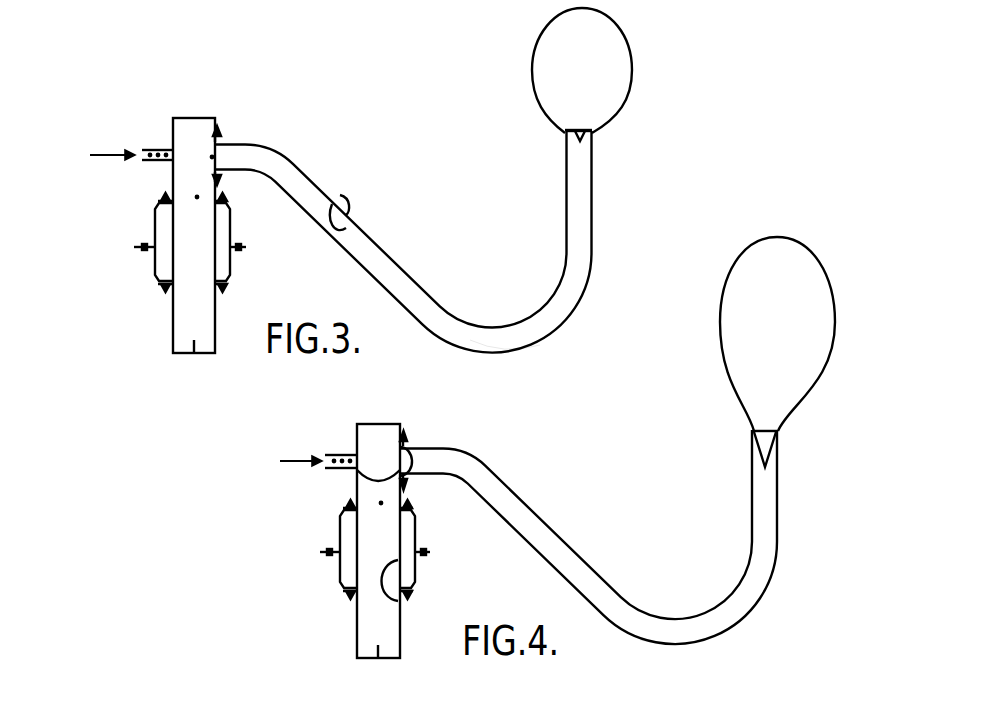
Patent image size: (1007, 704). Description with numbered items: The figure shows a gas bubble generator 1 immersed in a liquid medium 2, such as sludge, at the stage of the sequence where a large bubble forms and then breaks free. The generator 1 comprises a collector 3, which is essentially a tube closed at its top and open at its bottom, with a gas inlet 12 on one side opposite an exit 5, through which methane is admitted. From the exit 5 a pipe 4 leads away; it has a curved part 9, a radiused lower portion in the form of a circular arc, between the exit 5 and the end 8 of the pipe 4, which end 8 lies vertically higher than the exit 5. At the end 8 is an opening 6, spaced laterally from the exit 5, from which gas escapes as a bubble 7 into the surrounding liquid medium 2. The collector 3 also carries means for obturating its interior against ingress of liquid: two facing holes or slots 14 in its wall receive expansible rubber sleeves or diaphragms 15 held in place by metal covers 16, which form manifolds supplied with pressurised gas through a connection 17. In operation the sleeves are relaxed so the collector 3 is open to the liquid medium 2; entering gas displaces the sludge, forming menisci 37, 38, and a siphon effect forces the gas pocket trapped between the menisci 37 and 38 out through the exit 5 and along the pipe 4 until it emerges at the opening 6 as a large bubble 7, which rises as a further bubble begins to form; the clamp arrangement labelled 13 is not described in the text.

In FIG. 3, the gas bubble generator 1 is at (428, 240).
In FIG. 4, the gas bubble generator 1 is at (592, 540).
In FIG. 3, the liquid medium 2 is at (277, 258).
In FIG. 4, the liquid medium 2 is at (497, 586).
In FIG. 3, the collector 3 is at (216, 122).
In FIG. 4, the collector 3 is at (400, 432).
In FIG. 3, the pipe 4 is at (578, 250).
In FIG. 4, the pipe 4 is at (768, 570).
In FIG. 3, the exit 5 is at (220, 183).
In FIG. 4, the exit 5 is at (403, 488).
In FIG. 3, the opening 6 is at (563, 127).
In FIG. 4, the opening 6 is at (752, 430).
In FIG. 3, the bubble 7 is at (572, 84).
In FIG. 4, the bubble 7 is at (767, 332).
In FIG. 3, the end of the pipe 8 is at (594, 168).
In FIG. 4, the end of the pipe 8 is at (779, 440).
In FIG. 3, the curved part 9 is at (545, 344).
In FIG. 4, the curved part 9 is at (650, 645).
In FIG. 3, the gas inlet 12 is at (152, 150).
In FIG. 4, the gas inlet 12 is at (343, 457).
In FIG. 3, the clamp 13 is at (148, 265).
In FIG. 4, the clamp 13 is at (342, 586).
In FIG. 4, the holes or slots 14 is at (386, 574).
In FIG. 4, the sleeves or diaphragms 15 is at (350, 560).
In FIG. 3, the covers 16 is at (154, 280).
In FIG. 4, the covers 16 is at (417, 572).
In FIG. 4, the connection 17 is at (331, 545).
In FIG. 3, the meniscus 37 is at (338, 202).
In FIG. 4, the meniscus 38 is at (413, 458).